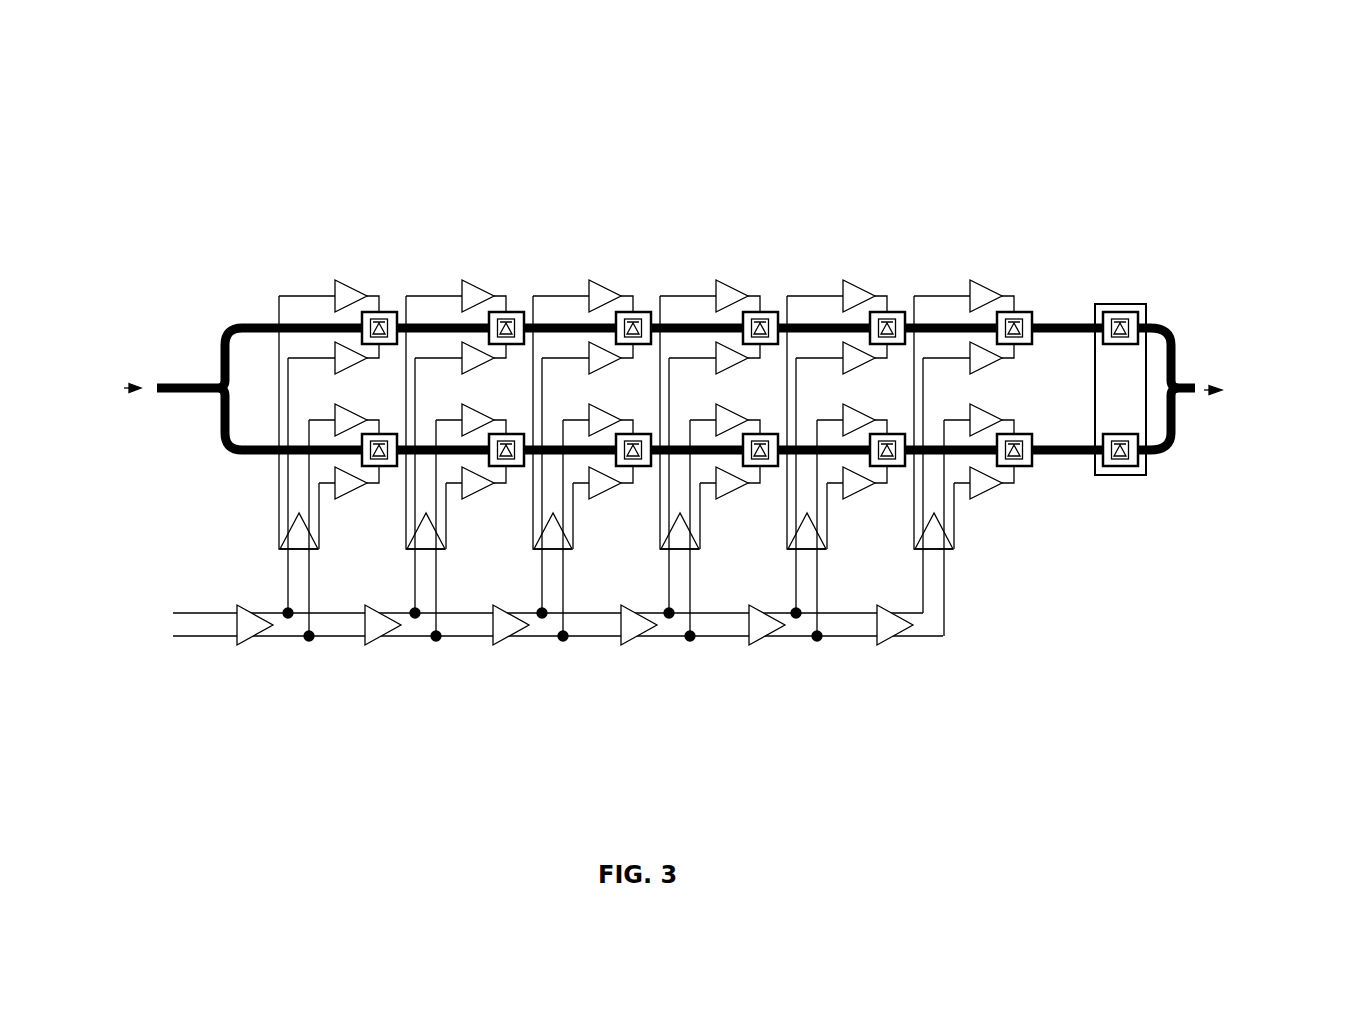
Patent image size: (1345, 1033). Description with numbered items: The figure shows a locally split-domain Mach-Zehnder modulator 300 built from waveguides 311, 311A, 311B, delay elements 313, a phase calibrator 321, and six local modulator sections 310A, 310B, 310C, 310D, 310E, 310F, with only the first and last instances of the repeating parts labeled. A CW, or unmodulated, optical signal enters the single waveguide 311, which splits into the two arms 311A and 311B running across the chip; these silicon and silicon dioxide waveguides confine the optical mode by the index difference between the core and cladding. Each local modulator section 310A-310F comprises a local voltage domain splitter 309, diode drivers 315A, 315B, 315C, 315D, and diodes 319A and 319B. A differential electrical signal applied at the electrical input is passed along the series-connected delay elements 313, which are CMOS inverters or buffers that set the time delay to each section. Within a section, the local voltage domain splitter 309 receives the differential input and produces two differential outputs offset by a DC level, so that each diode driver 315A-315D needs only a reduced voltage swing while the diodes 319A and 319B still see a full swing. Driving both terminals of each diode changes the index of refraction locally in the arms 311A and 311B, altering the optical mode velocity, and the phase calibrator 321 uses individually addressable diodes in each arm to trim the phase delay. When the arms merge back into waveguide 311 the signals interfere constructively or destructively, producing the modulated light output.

The locally split-domain Mach-Zehnder modulator 300 is at (240, 122).
The local voltage domain splitter 309 is at (281, 549).
The local modulator section 310A is at (334, 386).
The local modulator section 310B is at (467, 405).
The local modulator section 310C is at (592, 386).
The local modulator section 310D is at (719, 404).
The local modulator section 310E is at (846, 386).
The local modulator section 310F is at (964, 402).
The waveguide 311 is at (177, 385).
The waveguide 311A is at (236, 322).
The waveguide 311B is at (234, 460).
The delay element 313 is at (250, 647).
The diode driver 315A is at (358, 280).
The diode driver 315B is at (344, 360).
The diode driver 315C is at (343, 425).
The diode driver 315D is at (339, 490).
The diode 319A is at (386, 312).
The diode 319B is at (381, 467).
The phase calibrator 321 is at (1141, 307).